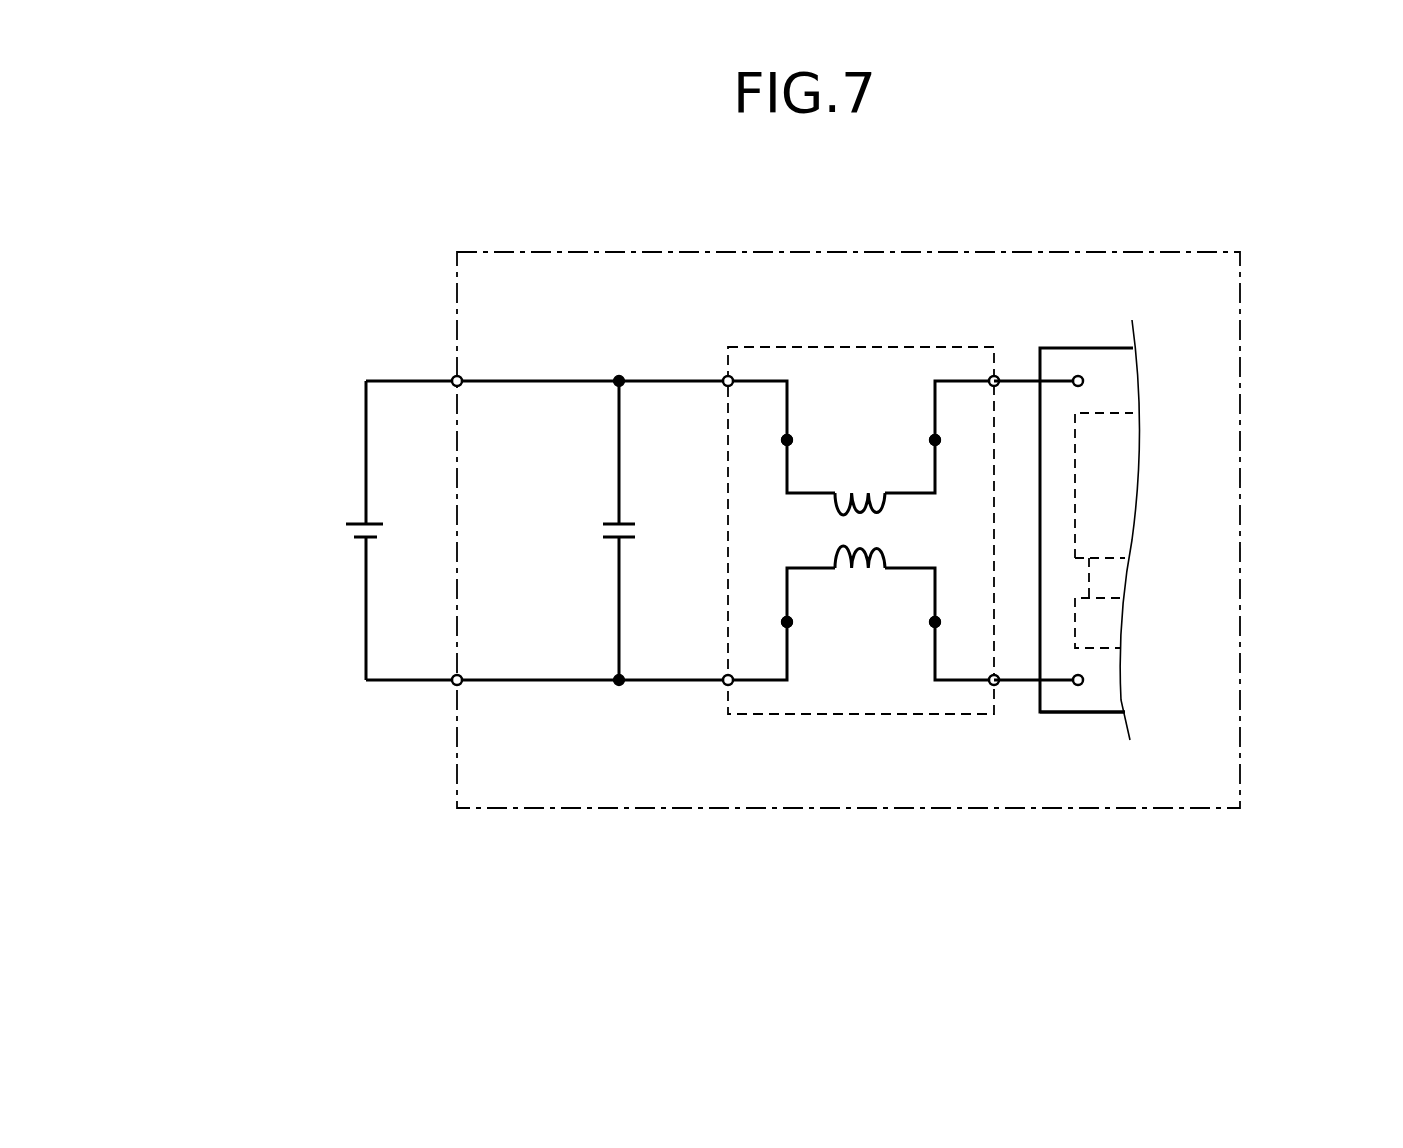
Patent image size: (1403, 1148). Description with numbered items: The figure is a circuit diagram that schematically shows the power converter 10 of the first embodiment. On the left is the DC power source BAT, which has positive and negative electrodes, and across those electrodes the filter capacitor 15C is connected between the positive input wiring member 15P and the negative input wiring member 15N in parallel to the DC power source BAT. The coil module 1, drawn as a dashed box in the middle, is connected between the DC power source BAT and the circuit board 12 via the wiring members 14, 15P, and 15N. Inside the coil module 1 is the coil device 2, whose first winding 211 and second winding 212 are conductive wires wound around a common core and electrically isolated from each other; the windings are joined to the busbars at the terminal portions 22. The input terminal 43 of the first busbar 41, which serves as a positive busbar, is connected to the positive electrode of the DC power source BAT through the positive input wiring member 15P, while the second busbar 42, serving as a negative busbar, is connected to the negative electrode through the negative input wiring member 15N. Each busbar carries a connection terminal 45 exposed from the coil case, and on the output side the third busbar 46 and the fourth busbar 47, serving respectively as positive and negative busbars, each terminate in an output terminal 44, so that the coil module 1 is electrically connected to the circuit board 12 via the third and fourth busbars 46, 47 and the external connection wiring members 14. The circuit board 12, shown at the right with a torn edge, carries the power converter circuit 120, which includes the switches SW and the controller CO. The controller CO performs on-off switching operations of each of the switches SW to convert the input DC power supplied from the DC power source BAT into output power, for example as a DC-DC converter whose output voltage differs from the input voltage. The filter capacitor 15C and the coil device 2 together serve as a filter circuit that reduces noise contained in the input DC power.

The power converter 10 is at (635, 808).
The coil module 1 is at (840, 714).
The coil device 2 is at (907, 375).
The first winding 211 is at (887, 508).
The second winding 212 is at (907, 553).
The coil terminal portion 22 is at (798, 496).
The first busbar 41 is at (763, 381).
The second busbar 42 is at (762, 680).
The input terminal 43 is at (726, 378).
The output terminal 44 is at (994, 378).
The connection terminal 45 is at (787, 440).
The third busbar 46 is at (965, 381).
The fourth busbar 47 is at (963, 680).
The external connection wiring member 14 is at (1020, 381).
The circuit board 12 is at (1189, 605).
The power converter circuit 120 is at (1098, 698).
The positive input wiring member 15P is at (562, 380).
The negative input wiring member 15N is at (572, 680).
The filter capacitor 15C is at (608, 530).
The DC power source BAT is at (352, 528).
The switch SW is at (1116, 495).
The controller CO is at (1108, 627).